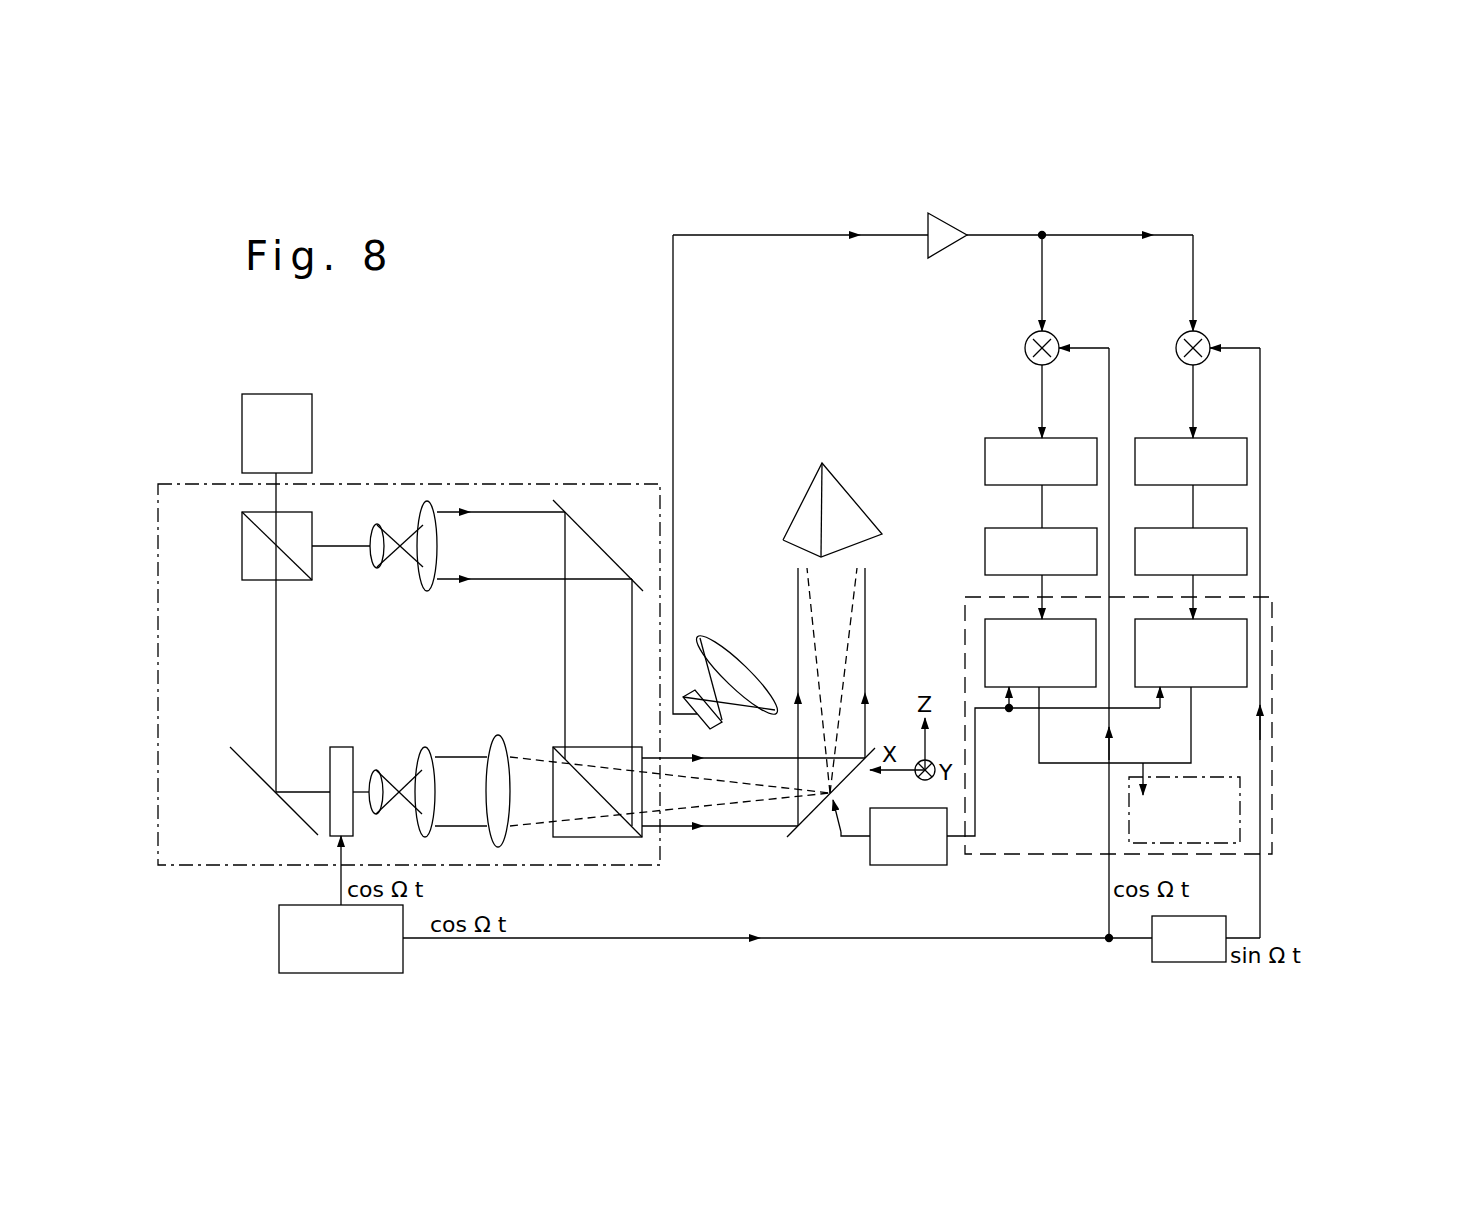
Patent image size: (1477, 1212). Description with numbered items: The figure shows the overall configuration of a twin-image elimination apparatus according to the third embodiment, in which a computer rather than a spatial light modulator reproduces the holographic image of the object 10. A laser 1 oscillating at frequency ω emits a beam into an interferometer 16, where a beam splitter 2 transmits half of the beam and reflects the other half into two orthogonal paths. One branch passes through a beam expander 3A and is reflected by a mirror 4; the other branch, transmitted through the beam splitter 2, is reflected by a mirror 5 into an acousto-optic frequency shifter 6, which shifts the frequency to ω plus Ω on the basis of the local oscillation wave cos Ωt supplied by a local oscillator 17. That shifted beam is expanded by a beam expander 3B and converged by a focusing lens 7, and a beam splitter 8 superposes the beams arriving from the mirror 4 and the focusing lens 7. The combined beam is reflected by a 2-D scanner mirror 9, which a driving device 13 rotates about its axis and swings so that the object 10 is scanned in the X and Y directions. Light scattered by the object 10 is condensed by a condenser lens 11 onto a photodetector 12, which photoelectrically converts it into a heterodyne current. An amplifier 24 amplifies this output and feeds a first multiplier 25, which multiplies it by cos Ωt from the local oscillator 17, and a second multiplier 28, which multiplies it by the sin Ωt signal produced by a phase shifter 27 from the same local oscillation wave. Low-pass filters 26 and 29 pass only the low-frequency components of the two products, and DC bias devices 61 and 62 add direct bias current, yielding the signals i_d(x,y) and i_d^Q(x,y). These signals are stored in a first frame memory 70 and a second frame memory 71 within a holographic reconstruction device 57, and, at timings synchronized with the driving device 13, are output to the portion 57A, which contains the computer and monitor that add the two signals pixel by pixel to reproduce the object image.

The laser 1 is at (242, 432).
The beam splitter 2 is at (242, 545).
The beam expander 3A is at (405, 525).
The beam expander 3B is at (403, 773).
The mirror 4 is at (567, 513).
The mirror 5 is at (243, 763).
The acousto-optic frequency shifter 6 is at (343, 747).
The focusing lens 7 is at (501, 735).
The beam splitter 8 is at (595, 837).
The 2-D scanner mirror 9 is at (802, 822).
The object 10 is at (848, 496).
The condenser lens 11 is at (722, 645).
The photodetector 12 is at (691, 690).
The driving device 13 is at (905, 865).
The interferometer 16 is at (466, 484).
The local oscillator 17 is at (279, 943).
The amplifier 24 is at (948, 215).
The first multiplier 25 is at (1052, 337).
The low-pass filter 26 is at (985, 462).
The phase shifter 27 is at (1152, 956).
The second multiplier 28 is at (1203, 337).
The low-pass filter 29 is at (1247, 462).
The holographic reconstruction device 57 is at (1272, 695).
The portion of holographic reconstruction device 57A is at (1240, 830).
The DC bias device 61 is at (985, 552).
The DC bias device 62 is at (1247, 552).
The first frame memory 70 is at (985, 655).
The second frame memory 71 is at (1247, 655).